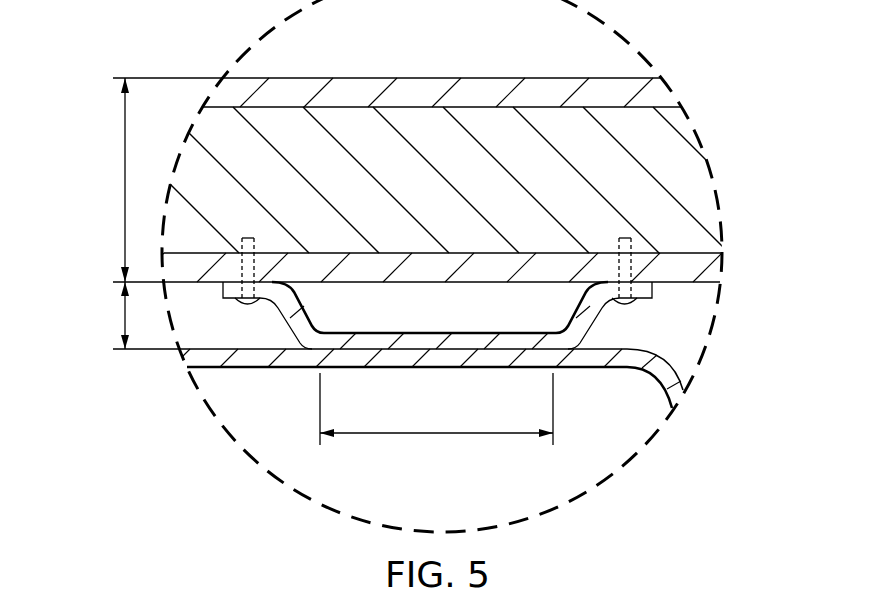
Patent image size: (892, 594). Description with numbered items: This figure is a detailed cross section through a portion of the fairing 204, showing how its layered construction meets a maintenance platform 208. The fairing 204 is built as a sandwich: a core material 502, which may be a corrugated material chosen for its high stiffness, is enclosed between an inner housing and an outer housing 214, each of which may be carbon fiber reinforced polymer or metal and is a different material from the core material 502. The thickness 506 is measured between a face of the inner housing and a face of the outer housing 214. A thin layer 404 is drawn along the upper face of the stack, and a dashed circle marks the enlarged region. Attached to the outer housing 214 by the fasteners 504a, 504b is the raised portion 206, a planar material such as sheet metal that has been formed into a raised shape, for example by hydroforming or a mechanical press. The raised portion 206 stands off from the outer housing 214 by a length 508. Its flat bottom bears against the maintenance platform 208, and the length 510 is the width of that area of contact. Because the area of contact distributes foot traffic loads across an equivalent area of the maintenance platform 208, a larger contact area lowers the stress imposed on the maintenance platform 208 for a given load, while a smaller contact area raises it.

The fairing 204 is at (416, 72).
The top layer 404 is at (551, 90).
The outer housing 214 is at (677, 268).
The raised portion 206 is at (282, 317).
The maintenance platform 208 is at (388, 370).
The core material 502 is at (703, 177).
The fastener 504a is at (248, 236).
The fastener 504b is at (625, 236).
The thickness 506 is at (123, 180).
The length 508 is at (123, 318).
The length 510 is at (435, 437).